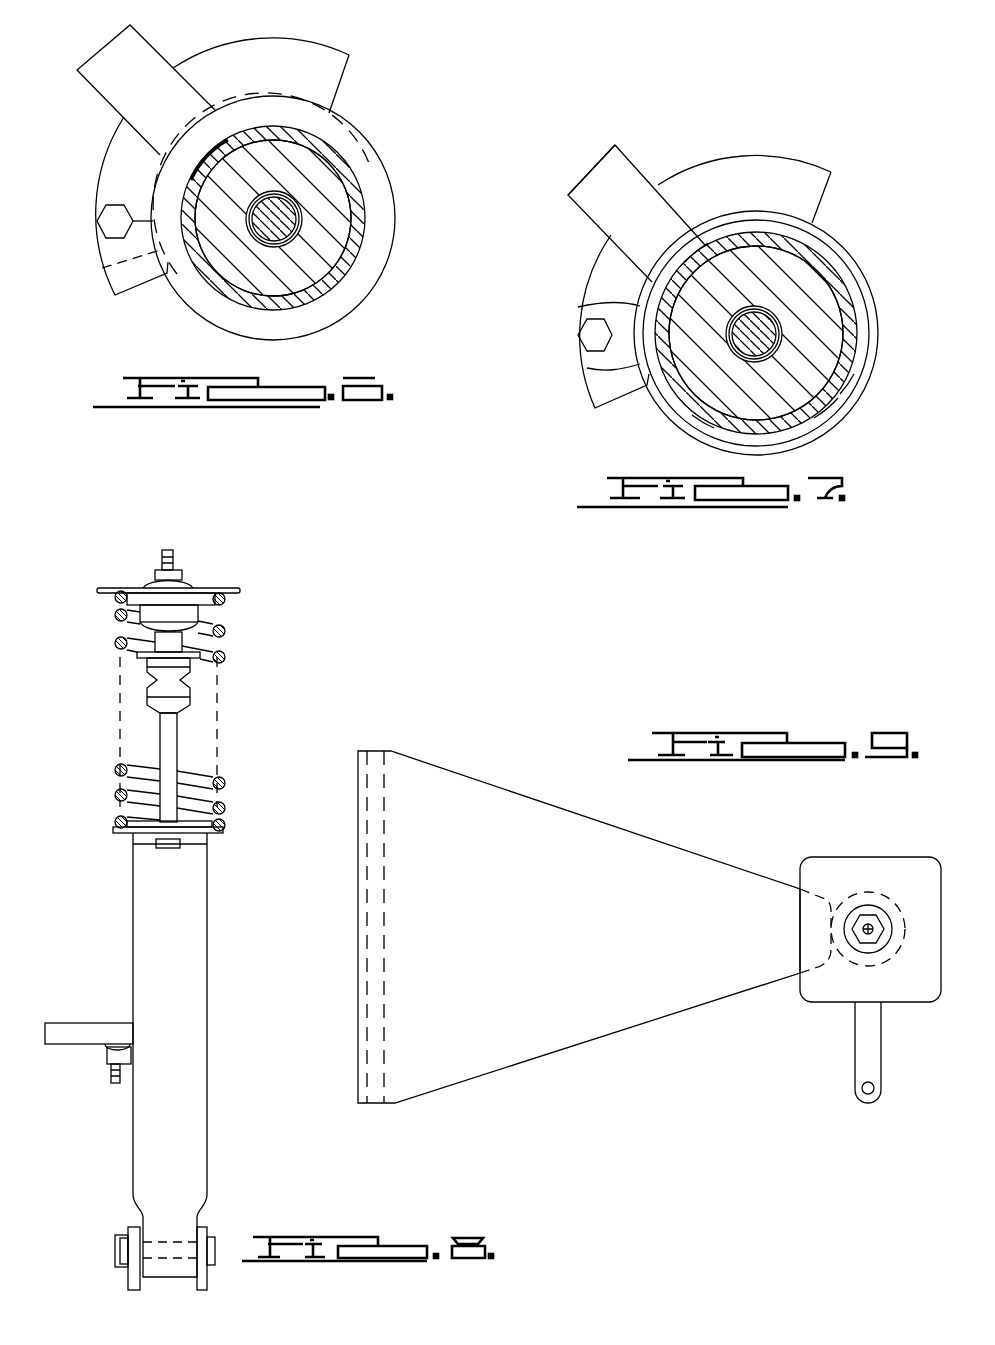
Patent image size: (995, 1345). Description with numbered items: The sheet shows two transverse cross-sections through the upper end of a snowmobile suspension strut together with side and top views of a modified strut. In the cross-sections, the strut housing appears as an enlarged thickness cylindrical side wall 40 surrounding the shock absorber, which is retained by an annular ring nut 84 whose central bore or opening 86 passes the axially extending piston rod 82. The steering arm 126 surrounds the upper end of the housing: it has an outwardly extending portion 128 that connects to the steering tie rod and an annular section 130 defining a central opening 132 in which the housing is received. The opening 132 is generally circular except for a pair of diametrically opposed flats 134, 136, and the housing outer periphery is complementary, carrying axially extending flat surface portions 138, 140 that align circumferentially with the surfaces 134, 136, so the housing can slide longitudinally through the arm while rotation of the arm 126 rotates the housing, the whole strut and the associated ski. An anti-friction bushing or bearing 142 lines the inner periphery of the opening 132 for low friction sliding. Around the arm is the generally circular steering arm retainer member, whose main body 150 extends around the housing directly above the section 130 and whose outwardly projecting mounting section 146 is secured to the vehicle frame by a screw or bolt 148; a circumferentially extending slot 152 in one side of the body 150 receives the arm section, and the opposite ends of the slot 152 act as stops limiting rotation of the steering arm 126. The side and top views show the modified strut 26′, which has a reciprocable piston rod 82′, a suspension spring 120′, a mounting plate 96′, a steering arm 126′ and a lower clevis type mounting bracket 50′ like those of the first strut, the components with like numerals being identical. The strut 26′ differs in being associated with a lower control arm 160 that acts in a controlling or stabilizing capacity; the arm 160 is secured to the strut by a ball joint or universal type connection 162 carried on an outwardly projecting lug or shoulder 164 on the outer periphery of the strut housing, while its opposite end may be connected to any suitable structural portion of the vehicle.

In FIG. 6, the cylindrical side wall 40 is at (267, 310).
In FIG. 6, the piston rod 82 is at (297, 210).
In FIG. 7, the piston rod 82 is at (780, 317).
In FIG. 6, the ring nut 84 is at (333, 252).
In FIG. 7, the ring nut 84 is at (828, 338).
In FIG. 6, the central bore 86 is at (300, 228).
In FIG. 7, the central bore 86 is at (773, 340).
In FIG. 7, the steering arm 126 is at (577, 208).
In FIG. 6, the outwardly extending portion 128 is at (110, 88).
In FIG. 7, the outwardly extending portion 128 is at (588, 173).
In FIG. 7, the annular section 130 is at (682, 410).
In FIG. 7, the central opening 132 is at (700, 422).
In FIG. 7, the flat surface 134 is at (827, 407).
In FIG. 7, the flat surface 136 is at (702, 228).
In FIG. 6, the flat surface portion 138 is at (214, 150).
In FIG. 7, the flat surface portion 138 is at (687, 270).
In FIG. 6, the flat surface portion 140 is at (327, 293).
In FIG. 7, the flat surface portion 140 is at (823, 410).
In FIG. 7, the anti-friction bushing 142 is at (847, 388).
In FIG. 6, the mounting section 146 is at (103, 180).
In FIG. 7, the mounting section 146 is at (588, 272).
In FIG. 6, the bolt 148 is at (108, 213).
In FIG. 7, the bolt 148 is at (585, 332).
In FIG. 6, the main body 150 is at (133, 224).
In FIG. 7, the main body 150 is at (578, 307).
In FIG. 6, the circumferentially extending slot 152 is at (102, 268).
In FIG. 7, the circumferentially extending slot 152 is at (587, 368).
In FIG. 8, the mounting plate 96′ is at (227, 588).
In FIG. 9, the mounting plate 96′ is at (837, 865).
In FIG. 8, the piston rod 82′ is at (177, 733).
In FIG. 9, the piston rod 82′ is at (870, 920).
In FIG. 8, the suspension spring 120′ is at (222, 780).
In FIG. 8, the strut arm 126′ is at (171, 848).
In FIG. 9, the strut arm 126′ is at (861, 1026).
In FIG. 8, the strut 26′ is at (210, 999).
In FIG. 8, the lower mounting bracket 50′ is at (203, 1228).
In FIG. 8, the lower control arm 160 is at (60, 1046).
In FIG. 9, the lower control arm 160 is at (556, 804).
In FIG. 8, the ball joint 162 is at (118, 1036).
In FIG. 8, the lug 164 is at (120, 1055).